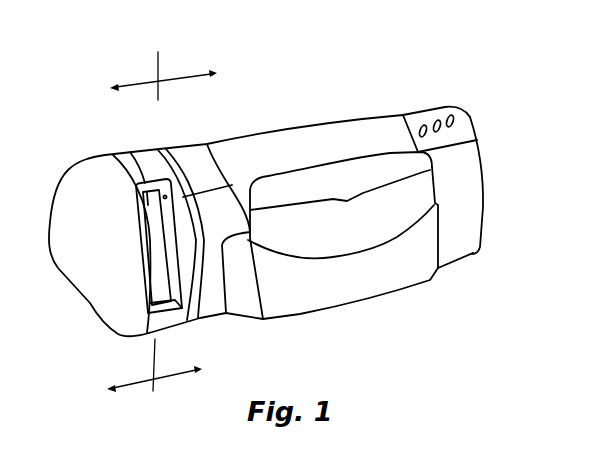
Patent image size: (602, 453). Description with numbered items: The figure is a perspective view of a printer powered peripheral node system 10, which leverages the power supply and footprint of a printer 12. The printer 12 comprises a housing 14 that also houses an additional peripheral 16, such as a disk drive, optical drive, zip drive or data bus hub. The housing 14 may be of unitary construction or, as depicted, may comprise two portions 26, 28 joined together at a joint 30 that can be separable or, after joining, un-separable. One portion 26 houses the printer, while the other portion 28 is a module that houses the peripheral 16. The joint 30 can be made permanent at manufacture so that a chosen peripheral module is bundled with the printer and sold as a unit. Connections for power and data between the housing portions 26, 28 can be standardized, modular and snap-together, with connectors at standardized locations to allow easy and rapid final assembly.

The printer powered peripheral node (PPPN) system 10 is at (131, 60).
The printer 12 is at (496, 184).
The housing 14 is at (463, 148).
The additional peripheral 16 is at (116, 156).
The housing portion 26 is at (194, 148).
The housing portion 28 is at (147, 160).
The joint 30 is at (163, 149).